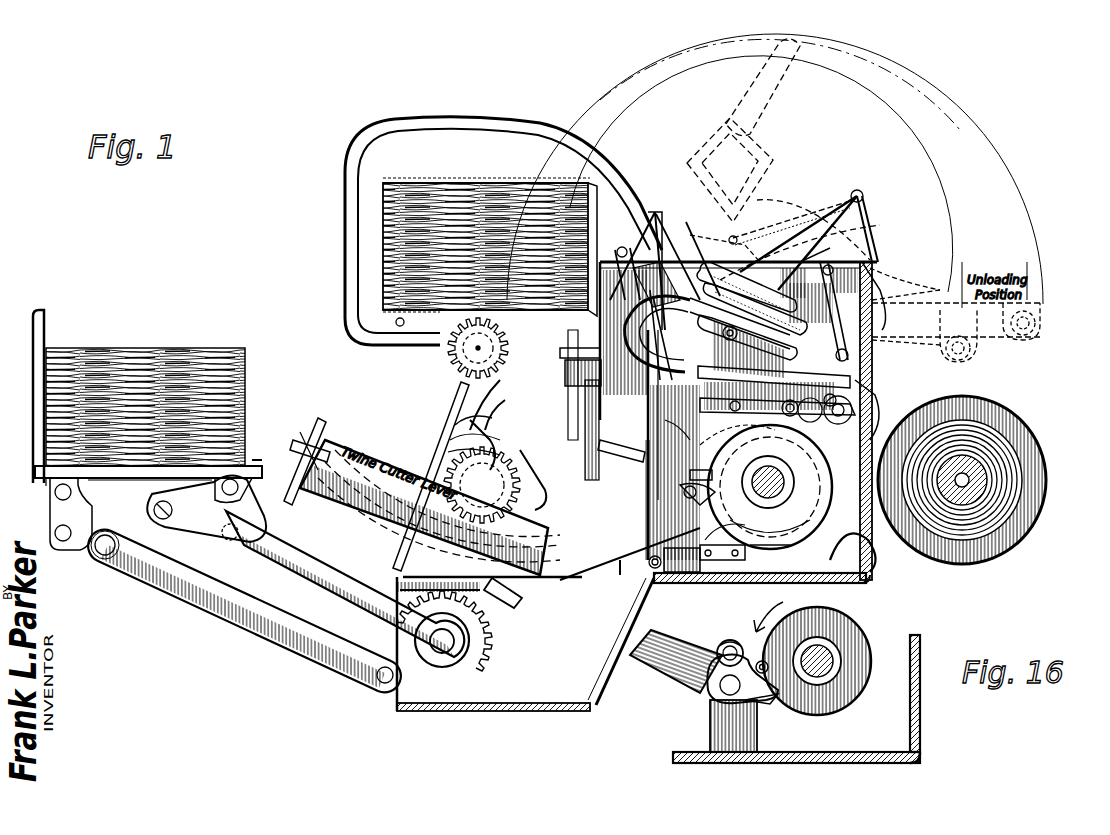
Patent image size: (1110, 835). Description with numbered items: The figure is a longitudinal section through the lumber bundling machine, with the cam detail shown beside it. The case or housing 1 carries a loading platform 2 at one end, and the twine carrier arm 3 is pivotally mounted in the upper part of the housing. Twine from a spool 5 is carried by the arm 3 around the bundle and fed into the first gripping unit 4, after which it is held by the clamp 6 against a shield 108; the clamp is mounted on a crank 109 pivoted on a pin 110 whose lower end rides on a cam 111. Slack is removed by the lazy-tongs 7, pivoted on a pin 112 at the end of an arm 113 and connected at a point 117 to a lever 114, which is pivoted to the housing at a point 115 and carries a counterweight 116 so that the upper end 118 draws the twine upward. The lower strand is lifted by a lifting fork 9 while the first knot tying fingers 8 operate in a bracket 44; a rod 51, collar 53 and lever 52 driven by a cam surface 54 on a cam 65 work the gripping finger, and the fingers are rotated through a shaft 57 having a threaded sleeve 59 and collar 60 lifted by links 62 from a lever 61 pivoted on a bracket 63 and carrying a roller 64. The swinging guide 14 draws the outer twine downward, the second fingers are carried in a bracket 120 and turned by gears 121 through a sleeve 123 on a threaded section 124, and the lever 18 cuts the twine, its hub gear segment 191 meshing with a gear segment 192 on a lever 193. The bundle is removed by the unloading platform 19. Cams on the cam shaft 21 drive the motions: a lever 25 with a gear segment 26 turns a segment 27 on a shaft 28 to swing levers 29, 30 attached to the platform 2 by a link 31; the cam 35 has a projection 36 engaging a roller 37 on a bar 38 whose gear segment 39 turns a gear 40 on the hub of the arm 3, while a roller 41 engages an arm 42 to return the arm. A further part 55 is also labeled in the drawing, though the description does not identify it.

In FIG. 1, the case or housing 1 is at (882, 572).
In FIG. 1, the loading platform 2 is at (40, 470).
In FIG. 1, the twine carrier arm 3 is at (346, 290).
In FIG. 1, the first gripping unit 4 is at (676, 250).
In FIG. 1, the spool 5 is at (1000, 420).
In FIG. 1, the clamp 6 is at (870, 238).
In FIG. 1, the lazy-tongs 7 is at (848, 193).
In FIG. 1, the first knot tying fingers 8 is at (625, 246).
In FIG. 1, the lifting fork 9 is at (648, 240).
In FIG. 1, the swinging guide 14 is at (777, 410).
In FIG. 1, the lever 18 is at (322, 422).
In FIG. 1, the unloading platform 19 is at (395, 322).
In FIG. 1, the cam shaft 21 is at (788, 478).
In FIG. 1, the lever 25 is at (626, 582).
In FIG. 1, the gear segment 26 is at (520, 606).
In FIG. 1, the gear segment 27 is at (484, 650).
In FIG. 1, the shaft 28 is at (452, 652).
In FIG. 1, the lever 29 is at (312, 575).
In FIG. 1, the lever 30 is at (274, 650).
In FIG. 1, the link 31 is at (165, 522).
In FIG. 16, the cam 35 is at (866, 636).
In FIG. 16, the projection 36 is at (757, 652).
In FIG. 16, the roller 37 is at (724, 642).
In FIG. 16, the bar 38 is at (688, 686).
In FIG. 1, the gear segment 39 is at (470, 425).
In FIG. 1, the gear 40 is at (452, 360).
In FIG. 16, the roller 41 is at (766, 672).
In FIG. 16, the arm 42 is at (766, 698).
In FIG. 1, the bracket 44 is at (630, 350).
In FIG. 1, the rod 51 is at (740, 435).
In FIG. 1, the lever 52 is at (728, 573).
In FIG. 1, the collar 53 is at (680, 573).
In FIG. 1, the cam surface 54 is at (745, 562).
In FIG. 1, the base plate 55 is at (832, 582).
In FIG. 1, the shaft 57 is at (657, 404).
In FIG. 1, the threaded sleeve 59 is at (665, 422).
In FIG. 1, the collar 60 is at (644, 585).
In FIG. 1, the lever 61 is at (770, 482).
In FIG. 1, the links 62 is at (660, 458).
In FIG. 1, the bracket 63 is at (872, 384).
In FIG. 1, the roller 64 is at (828, 420).
In FIG. 1, the cam 65 is at (868, 546).
In FIG. 1, the shield 108 is at (880, 268).
In FIG. 1, the crank 109 is at (872, 216).
In FIG. 1, the pin 110 is at (852, 338).
In FIG. 1, the cam 111 is at (770, 532).
In FIG. 1, the pin 112 is at (765, 325).
In FIG. 1, the arm 113 is at (818, 262).
In FIG. 1, the lever 114 is at (750, 325).
In FIG. 1, the point 115 is at (850, 398).
In FIG. 1, the counterweight 116 is at (647, 392).
In FIG. 1, the point 117 is at (765, 346).
In FIG. 1, the upper end 118 is at (760, 230).
In FIG. 1, the bracket 120 is at (565, 376).
In FIG. 1, the gears 121 is at (562, 358).
In FIG. 1, the sleeve 123 is at (713, 472).
In FIG. 1, the threaded section 124 is at (708, 490).
In FIG. 1, the gear segment 191 is at (548, 490).
In FIG. 1, the gear segment 192 is at (470, 455).
In FIG. 1, the lever 193 is at (470, 440).